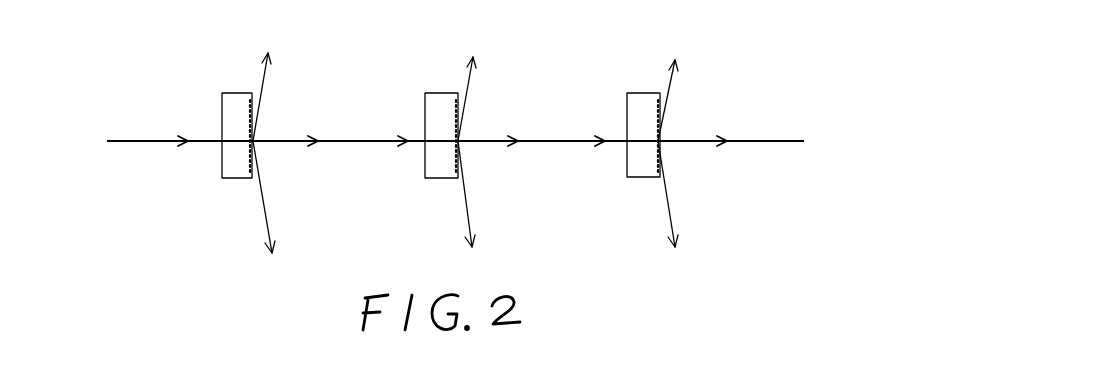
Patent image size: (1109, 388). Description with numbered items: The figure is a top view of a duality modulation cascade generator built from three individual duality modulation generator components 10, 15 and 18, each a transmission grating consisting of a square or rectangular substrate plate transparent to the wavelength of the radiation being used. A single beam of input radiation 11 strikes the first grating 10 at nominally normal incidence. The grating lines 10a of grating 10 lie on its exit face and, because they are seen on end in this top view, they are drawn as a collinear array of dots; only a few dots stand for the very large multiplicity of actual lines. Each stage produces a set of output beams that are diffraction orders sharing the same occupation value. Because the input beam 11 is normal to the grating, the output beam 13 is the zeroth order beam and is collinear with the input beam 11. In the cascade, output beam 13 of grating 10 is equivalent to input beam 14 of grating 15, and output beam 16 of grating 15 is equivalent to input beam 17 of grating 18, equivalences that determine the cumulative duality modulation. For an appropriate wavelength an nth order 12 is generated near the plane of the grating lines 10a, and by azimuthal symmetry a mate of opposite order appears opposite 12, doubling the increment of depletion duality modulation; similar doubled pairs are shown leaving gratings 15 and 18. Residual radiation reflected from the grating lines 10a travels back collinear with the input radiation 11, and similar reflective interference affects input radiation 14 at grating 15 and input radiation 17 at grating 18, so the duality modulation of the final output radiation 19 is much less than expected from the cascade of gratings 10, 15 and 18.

The duality modulation generator component (transmission grating G1) 10 is at (212, 107).
The grating lines 10a is at (250, 168).
The input radiation beam 11 is at (145, 151).
The nth order diffraction beam 12 is at (269, 79).
The output beam (0th order diffraction beam) 13 is at (290, 137).
The input beam of grating 15 14 is at (380, 153).
The duality modulation generator component (transmission grating G2) 15 is at (443, 88).
The output beam of grating 15 16 is at (492, 128).
The input beam of grating 18 17 is at (590, 153).
The duality modulation generator component (transmission grating G3) 18 is at (640, 87).
The final output radiation 19 is at (720, 150).